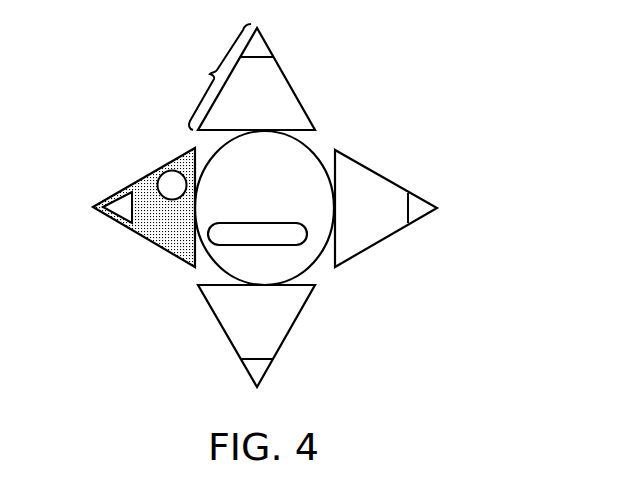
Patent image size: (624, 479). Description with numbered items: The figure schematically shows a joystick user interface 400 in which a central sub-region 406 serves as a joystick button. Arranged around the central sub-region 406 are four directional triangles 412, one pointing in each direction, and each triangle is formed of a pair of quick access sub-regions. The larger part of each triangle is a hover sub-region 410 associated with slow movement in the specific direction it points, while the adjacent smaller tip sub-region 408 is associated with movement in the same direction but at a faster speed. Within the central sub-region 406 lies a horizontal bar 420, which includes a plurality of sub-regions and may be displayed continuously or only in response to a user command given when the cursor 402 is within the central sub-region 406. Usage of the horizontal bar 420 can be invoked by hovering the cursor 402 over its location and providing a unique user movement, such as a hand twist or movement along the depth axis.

The joystick user interface 400 is at (457, 50).
The cursor 402 is at (152, 178).
The central sub-region 406 is at (313, 146).
The quick access sub-region 408 is at (265, 41).
The hover sub-region 410 is at (289, 77).
The directional triangle 412 is at (207, 77).
The horizontal bar 420 is at (252, 223).